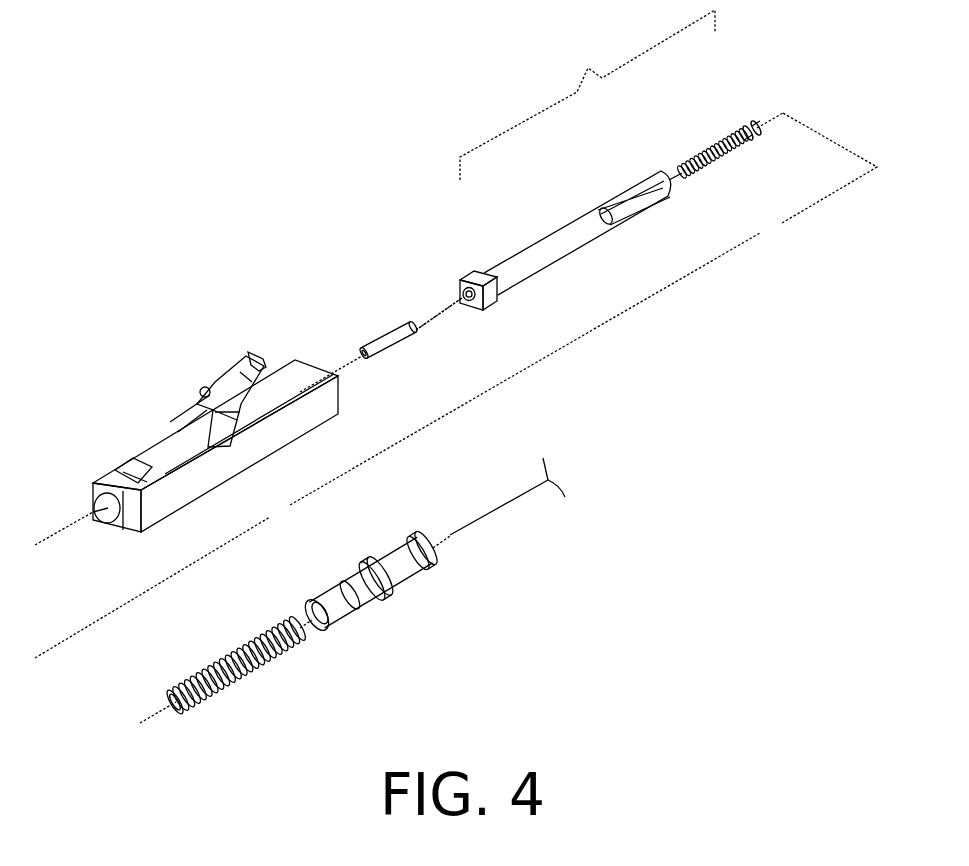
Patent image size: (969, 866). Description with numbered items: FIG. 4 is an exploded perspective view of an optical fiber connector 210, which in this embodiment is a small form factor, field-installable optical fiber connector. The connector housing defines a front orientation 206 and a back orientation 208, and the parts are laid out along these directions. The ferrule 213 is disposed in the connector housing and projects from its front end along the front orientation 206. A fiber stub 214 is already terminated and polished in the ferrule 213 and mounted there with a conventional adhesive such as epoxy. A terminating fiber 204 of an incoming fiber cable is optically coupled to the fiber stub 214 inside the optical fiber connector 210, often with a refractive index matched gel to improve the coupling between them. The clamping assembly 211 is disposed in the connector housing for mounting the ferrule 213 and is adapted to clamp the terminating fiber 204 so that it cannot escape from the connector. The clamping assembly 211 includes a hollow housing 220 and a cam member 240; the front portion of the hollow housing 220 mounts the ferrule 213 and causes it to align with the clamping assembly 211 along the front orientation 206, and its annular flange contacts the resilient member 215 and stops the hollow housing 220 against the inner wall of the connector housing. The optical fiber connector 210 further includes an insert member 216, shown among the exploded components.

The optical fiber connector 210 is at (155, 107).
The clamping assembly 211 is at (587, 95).
The terminating fiber 204 is at (470, 532).
The front orientation 206 is at (65, 528).
The back orientation 208 is at (347, 368).
The ferrule 213 is at (389, 336).
The fiber stub 214 is at (434, 301).
The hollow housing 220 is at (538, 237).
The cam member 240 is at (727, 137).
The resilient member 215 is at (228, 687).
The insert member 216 is at (337, 617).